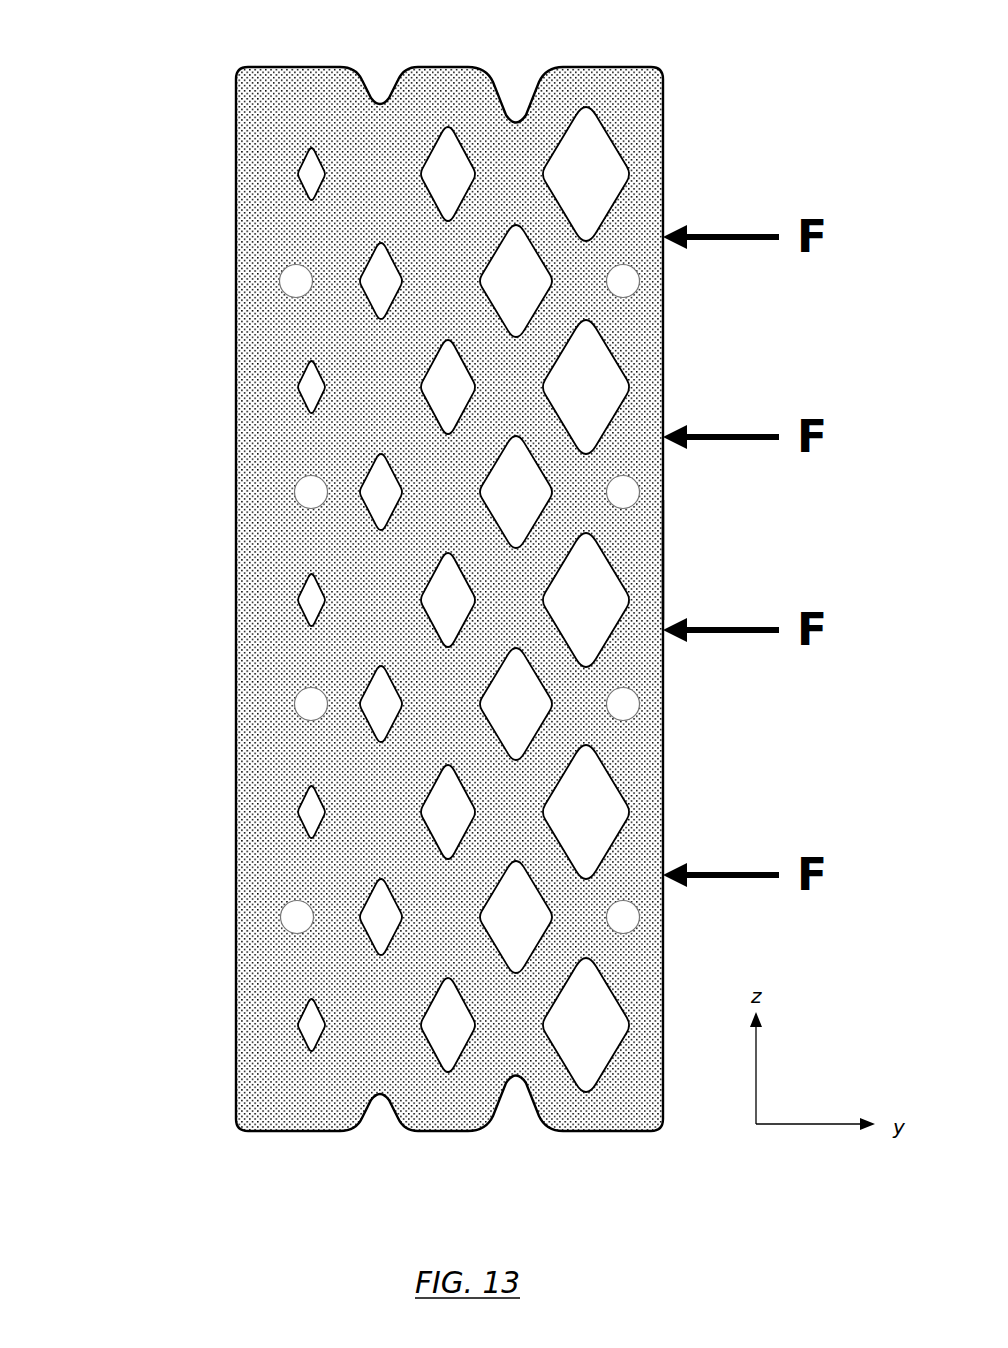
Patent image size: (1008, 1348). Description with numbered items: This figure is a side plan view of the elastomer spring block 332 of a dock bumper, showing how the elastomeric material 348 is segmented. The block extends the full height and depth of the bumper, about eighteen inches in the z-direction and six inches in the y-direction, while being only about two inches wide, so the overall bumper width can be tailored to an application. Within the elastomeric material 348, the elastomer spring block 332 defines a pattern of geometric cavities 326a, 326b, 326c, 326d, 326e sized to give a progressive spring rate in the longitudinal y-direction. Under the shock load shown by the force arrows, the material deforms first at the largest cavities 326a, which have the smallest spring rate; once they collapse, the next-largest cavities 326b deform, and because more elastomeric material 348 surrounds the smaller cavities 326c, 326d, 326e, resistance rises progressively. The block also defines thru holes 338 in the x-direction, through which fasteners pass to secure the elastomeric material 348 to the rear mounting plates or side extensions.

The elastomer spring block 332 is at (110, 107).
The largest geometric cavities 326a is at (601, 194).
The next-largest geometric cavities 326b is at (530, 299).
The geometric cavity 326c is at (461, 404).
The geometric cavity 326d is at (372, 467).
The geometric cavity 326e is at (299, 609).
The thru holes 338 is at (279, 284).
The elastomeric material 348 is at (663, 555).